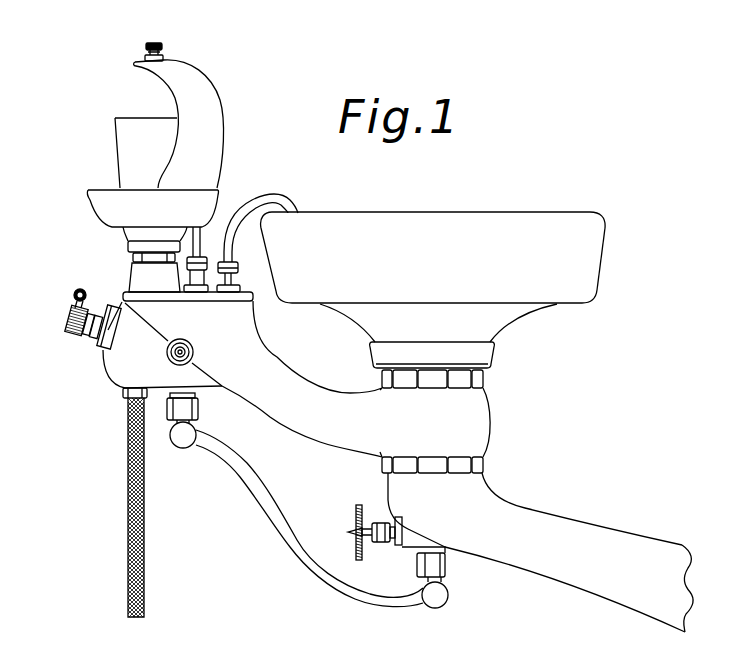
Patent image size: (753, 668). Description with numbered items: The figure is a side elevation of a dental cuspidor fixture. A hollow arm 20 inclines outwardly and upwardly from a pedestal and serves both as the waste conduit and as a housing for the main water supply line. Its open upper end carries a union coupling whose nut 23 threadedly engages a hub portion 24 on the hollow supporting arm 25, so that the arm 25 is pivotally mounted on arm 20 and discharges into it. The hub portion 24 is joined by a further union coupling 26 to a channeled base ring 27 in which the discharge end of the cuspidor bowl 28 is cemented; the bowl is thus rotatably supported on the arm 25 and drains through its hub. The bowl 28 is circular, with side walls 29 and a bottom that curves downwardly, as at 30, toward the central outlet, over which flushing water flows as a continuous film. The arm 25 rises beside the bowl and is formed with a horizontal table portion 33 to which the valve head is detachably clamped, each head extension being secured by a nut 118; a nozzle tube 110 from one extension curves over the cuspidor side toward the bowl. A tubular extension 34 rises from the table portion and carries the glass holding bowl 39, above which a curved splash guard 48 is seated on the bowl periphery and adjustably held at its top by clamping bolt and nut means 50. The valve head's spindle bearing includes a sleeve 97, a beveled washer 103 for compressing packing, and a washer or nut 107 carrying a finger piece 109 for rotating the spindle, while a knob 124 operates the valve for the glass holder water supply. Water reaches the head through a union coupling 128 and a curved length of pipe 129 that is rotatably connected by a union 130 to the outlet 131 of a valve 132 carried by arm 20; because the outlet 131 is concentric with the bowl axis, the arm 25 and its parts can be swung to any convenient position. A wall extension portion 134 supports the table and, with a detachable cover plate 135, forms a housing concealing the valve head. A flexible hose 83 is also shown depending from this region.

The hollow arm 20 is at (630, 540).
The nut 23 is at (483, 460).
The hub portion 24 is at (480, 428).
The hollow supporting arm 25 is at (275, 371).
The union coupling 26 is at (485, 378).
The channeled base ring 27 is at (491, 353).
The cuspidor bowl 28 is at (400, 212).
The side walls 29 is at (604, 258).
The curved bottom portion 30 is at (520, 316).
The horizontal table portion 33 is at (252, 303).
The tubular extension 34 is at (133, 270).
The glass holding bowl 39 is at (97, 188).
The splash guard 48 is at (224, 122).
The clamping bolt and nut means 50 is at (162, 57).
The flexible hose 83 is at (127, 472).
The sleeve 97 is at (102, 345).
The beveled washer 103 is at (73, 336).
The washer 107 is at (61, 314).
The finger piece or wing 109 is at (78, 290).
The nozzle tube 110 is at (268, 195).
The nut 118 is at (242, 277).
The fingerpiece or knob 124 is at (193, 350).
The union coupling 128 is at (198, 412).
The curved length of pipe 129 is at (238, 458).
The union 130 is at (447, 578).
The valve outlet 131 is at (427, 545).
The valve 132 is at (397, 548).
The wall extension portion 134 is at (150, 317).
The cover plate 135 is at (120, 363).